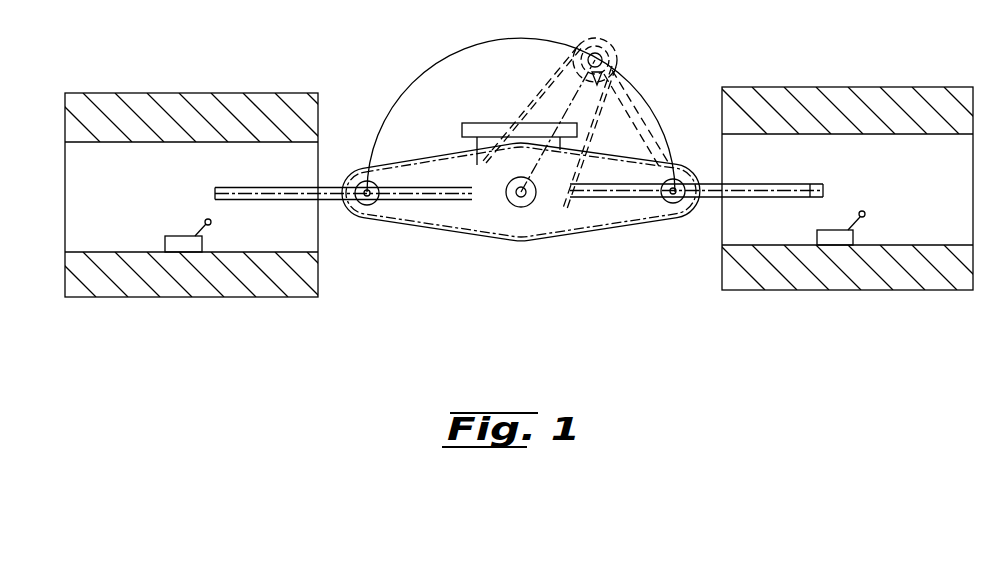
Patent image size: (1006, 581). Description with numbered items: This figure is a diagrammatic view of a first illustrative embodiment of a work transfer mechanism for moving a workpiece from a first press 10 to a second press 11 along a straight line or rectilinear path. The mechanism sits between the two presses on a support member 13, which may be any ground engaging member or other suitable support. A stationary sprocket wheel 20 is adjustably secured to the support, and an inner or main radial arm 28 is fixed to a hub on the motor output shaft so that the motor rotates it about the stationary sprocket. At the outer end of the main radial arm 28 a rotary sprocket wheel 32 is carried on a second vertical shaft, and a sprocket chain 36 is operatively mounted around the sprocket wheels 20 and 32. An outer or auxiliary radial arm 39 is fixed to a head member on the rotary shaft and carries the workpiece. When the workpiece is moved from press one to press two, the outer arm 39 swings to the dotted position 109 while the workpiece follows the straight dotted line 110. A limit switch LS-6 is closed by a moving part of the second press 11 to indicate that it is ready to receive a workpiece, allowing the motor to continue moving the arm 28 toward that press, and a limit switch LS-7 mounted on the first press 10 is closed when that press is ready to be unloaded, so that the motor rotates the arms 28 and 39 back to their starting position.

The first press 10 is at (742, 87).
The second press 11 is at (110, 92).
The support member 13 is at (463, 124).
The stationary sprocket wheel 20 is at (478, 212).
The main radial arm 28 is at (578, 198).
The rotary sprocket wheel 32 is at (677, 211).
The sprocket chain 36 is at (633, 223).
The auxiliary radial arm 39 is at (757, 199).
The dotted position of outer arm 109 is at (232, 188).
The dotted line path 110 is at (812, 199).
The limit switch LS6 LS-6 is at (202, 244).
The limit switch LS7 LS-7 is at (850, 240).